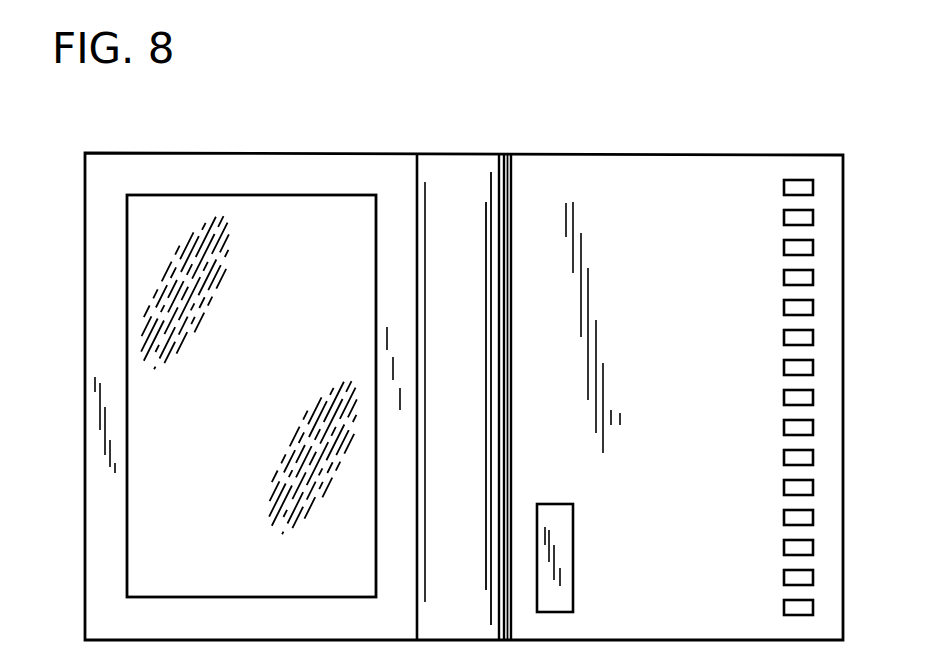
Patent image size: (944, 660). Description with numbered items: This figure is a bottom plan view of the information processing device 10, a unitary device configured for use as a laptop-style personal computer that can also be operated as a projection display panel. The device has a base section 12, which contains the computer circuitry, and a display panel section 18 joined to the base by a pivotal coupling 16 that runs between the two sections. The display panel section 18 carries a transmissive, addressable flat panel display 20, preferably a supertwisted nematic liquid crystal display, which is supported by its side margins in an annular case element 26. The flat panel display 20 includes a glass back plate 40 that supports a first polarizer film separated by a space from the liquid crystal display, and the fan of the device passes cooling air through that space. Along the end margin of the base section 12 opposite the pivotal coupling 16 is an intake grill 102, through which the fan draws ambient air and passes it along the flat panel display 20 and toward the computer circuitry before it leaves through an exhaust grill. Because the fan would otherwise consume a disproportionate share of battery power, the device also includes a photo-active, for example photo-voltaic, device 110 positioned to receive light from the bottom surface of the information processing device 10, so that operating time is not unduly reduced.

The information processing device 10 is at (537, 118).
The base section 12 is at (843, 443).
The pivotal coupling 16 is at (473, 177).
The display panel section 18 is at (146, 148).
The flat panel display 20 is at (256, 219).
The annular case element 26 is at (100, 243).
The glass back plate 40 is at (259, 358).
The intake grill 102 is at (781, 322).
The photo-active device 110 is at (573, 542).